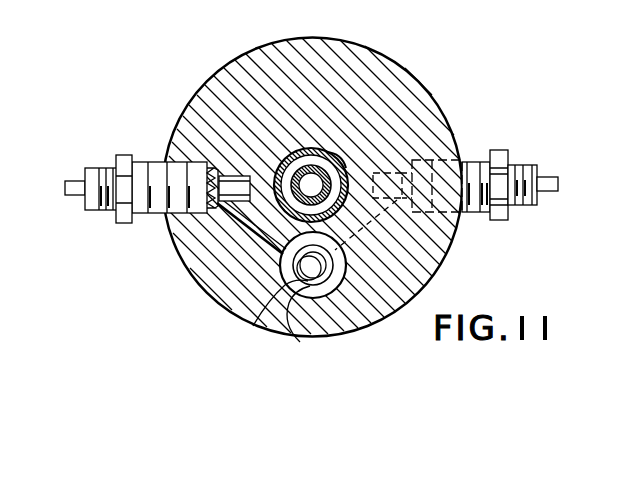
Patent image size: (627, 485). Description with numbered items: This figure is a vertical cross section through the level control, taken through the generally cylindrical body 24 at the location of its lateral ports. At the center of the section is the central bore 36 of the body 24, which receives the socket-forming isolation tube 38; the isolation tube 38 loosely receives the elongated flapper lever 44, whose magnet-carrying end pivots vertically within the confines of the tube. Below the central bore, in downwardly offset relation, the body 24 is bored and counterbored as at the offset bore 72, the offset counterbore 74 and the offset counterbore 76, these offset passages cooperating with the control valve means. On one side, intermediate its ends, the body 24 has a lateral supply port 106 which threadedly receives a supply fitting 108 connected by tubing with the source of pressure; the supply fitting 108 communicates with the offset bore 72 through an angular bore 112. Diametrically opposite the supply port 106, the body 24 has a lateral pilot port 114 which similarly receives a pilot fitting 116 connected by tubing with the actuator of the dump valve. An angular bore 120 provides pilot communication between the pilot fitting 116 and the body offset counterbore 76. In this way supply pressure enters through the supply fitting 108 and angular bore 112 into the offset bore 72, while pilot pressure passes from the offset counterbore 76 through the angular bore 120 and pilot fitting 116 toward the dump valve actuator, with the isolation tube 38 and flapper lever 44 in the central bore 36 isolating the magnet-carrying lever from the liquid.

The body 24 is at (408, 93).
The central bore 36 is at (313, 157).
The isolation tube 38 is at (346, 172).
The flapper lever 44 is at (242, 171).
The offset bore 72 is at (332, 266).
The offset counterbore 74 is at (253, 325).
The offset counterbore 76 is at (300, 342).
The supply port 106 is at (470, 154).
The supply fitting 108 is at (500, 150).
The angular bore 112 is at (373, 237).
The pilot port 114 is at (160, 162).
The pilot fitting 116 is at (98, 168).
The angular bore 120 is at (258, 236).